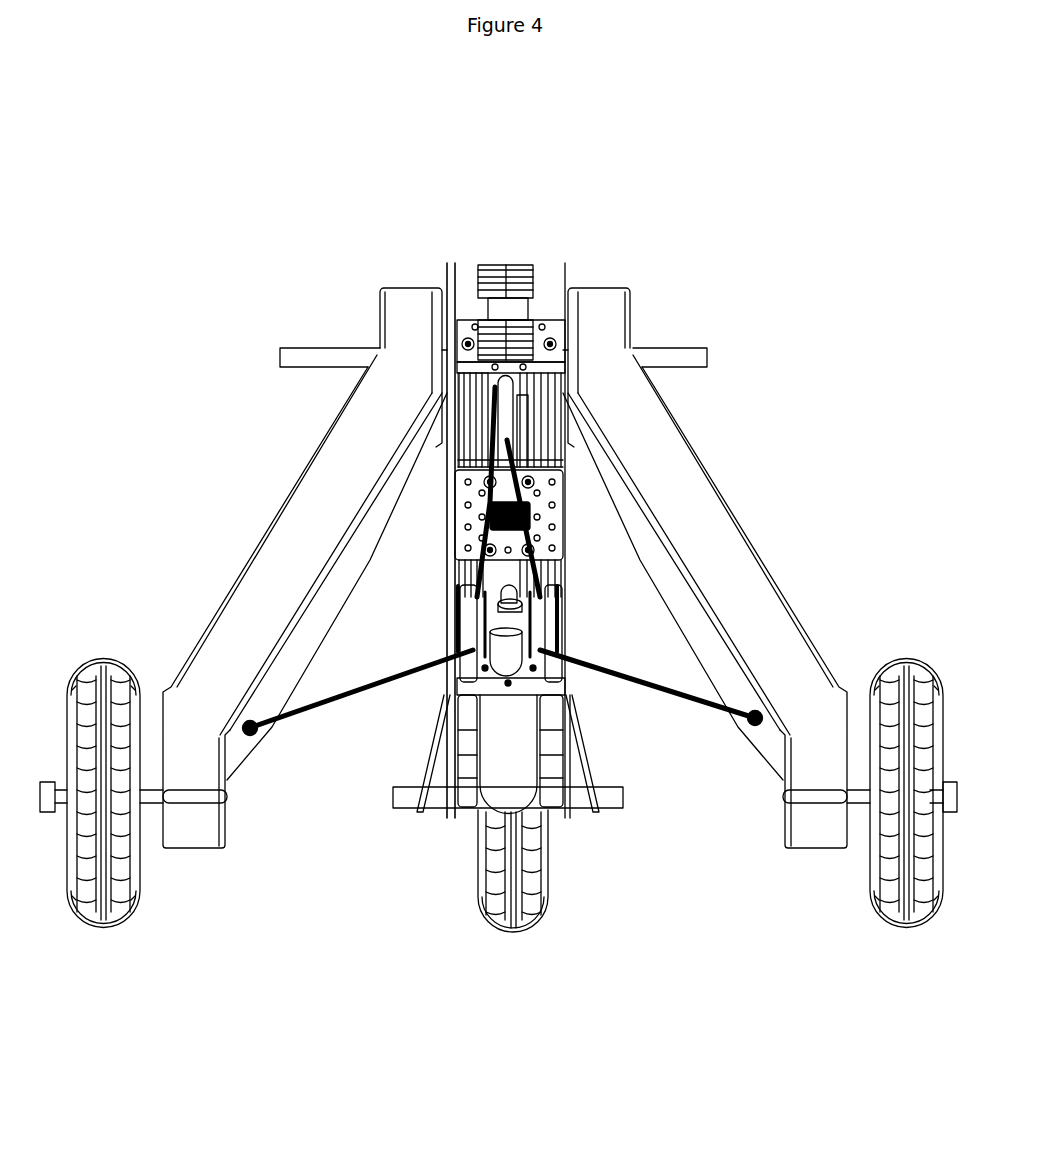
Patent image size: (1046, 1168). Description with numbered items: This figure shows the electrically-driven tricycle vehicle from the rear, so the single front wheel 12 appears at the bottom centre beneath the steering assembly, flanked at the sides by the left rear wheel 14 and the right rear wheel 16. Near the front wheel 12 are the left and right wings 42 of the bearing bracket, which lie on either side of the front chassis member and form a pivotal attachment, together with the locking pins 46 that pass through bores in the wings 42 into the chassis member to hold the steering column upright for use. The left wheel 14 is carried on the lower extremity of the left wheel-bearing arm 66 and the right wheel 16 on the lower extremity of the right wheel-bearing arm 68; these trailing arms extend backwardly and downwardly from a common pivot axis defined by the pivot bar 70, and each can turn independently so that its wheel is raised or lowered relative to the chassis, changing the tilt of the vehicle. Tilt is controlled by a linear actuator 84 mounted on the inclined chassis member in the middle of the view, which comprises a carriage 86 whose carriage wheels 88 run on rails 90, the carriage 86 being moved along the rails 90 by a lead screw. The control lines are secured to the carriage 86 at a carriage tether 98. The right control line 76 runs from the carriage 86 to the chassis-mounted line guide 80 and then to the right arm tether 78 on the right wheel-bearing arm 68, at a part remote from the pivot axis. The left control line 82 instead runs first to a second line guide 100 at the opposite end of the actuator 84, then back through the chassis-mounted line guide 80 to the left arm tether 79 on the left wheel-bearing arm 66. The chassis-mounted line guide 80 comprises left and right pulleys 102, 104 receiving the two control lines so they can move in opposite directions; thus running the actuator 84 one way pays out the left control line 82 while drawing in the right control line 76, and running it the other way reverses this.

The front wheel 12 is at (527, 925).
The left rear wheel 14 is at (112, 925).
The right rear wheel 16 is at (883, 918).
The wings 42 is at (427, 767).
The locking pins 46 is at (623, 800).
The left wheel-bearing arm 66 is at (245, 563).
The right wheel-bearing arm 68 is at (808, 625).
The pivot bar 70 is at (673, 348).
The right control line 76 is at (627, 677).
The right arm tether 78 is at (752, 727).
The left arm tether 79 is at (252, 735).
The chassis-mounted line guide 80 is at (567, 593).
The left control line 82 is at (330, 697).
The linear actuator 84 is at (567, 563).
The carriage 86 is at (563, 505).
The carriage wheels 88 is at (485, 463).
The rails 90 is at (457, 458).
The carriage tether 98 is at (498, 522).
The second line guide 100 is at (490, 395).
The left pulley 102 is at (455, 623).
The right pulley 104 is at (563, 623).